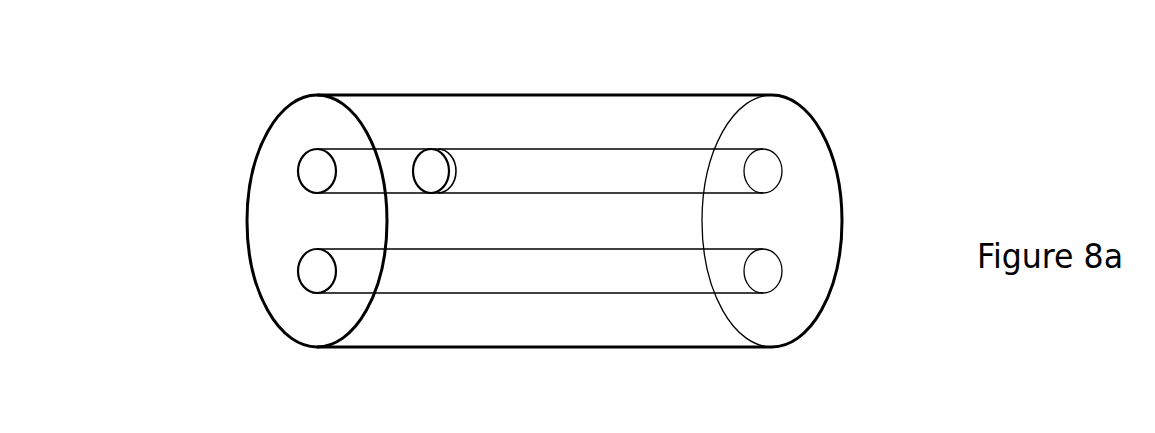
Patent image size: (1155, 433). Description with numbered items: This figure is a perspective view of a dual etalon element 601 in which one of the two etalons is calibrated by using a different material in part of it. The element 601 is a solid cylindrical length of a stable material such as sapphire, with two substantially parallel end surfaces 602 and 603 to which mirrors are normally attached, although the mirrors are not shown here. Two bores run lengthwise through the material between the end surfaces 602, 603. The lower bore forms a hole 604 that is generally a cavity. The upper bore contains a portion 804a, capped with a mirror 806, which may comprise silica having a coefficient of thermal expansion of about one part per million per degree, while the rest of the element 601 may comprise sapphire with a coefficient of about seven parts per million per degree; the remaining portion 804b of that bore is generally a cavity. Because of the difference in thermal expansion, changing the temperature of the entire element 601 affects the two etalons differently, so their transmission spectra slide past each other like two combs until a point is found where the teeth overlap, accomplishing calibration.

The dual etalon element 601 is at (518, 96).
The first surface 602 is at (290, 130).
The second surface 603 is at (790, 130).
The hole 604 is at (518, 275).
The different-material portion 804a is at (397, 167).
The cavity portion 804b is at (632, 168).
The mirror 806 is at (432, 148).